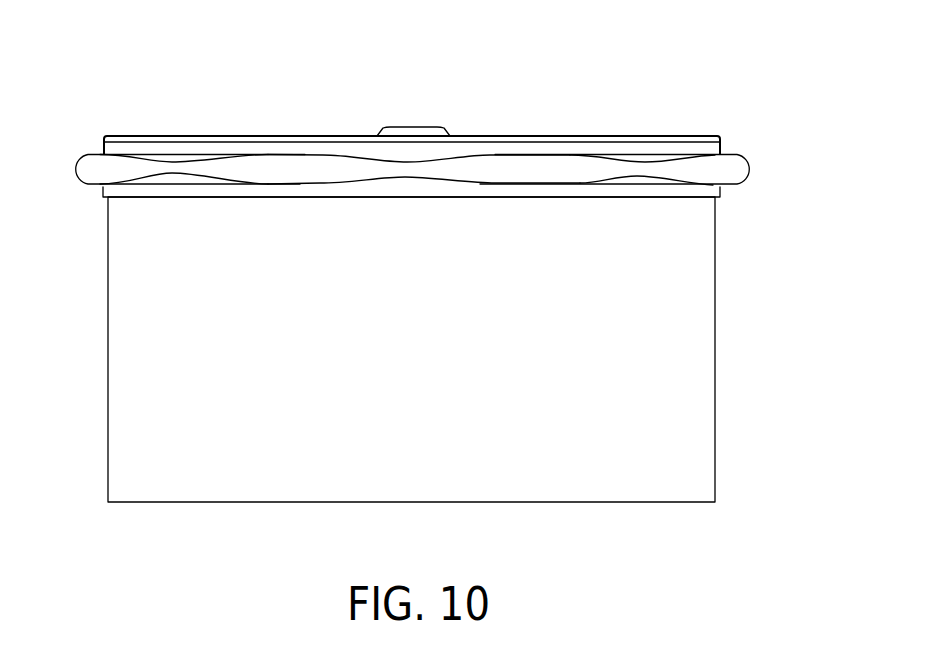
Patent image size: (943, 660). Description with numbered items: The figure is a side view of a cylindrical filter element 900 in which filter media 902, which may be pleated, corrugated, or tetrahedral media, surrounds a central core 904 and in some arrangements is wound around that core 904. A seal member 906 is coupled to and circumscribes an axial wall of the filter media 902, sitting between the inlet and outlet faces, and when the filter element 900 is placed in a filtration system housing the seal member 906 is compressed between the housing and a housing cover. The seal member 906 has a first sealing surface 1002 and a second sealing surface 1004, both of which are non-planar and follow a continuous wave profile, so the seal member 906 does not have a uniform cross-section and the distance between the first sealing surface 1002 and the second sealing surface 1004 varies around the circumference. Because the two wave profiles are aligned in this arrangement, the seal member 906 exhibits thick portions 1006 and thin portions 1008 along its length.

The filter element 900 is at (134, 106).
The filter media 902 is at (132, 445).
The central core 904 is at (423, 128).
The seal member 906 is at (740, 167).
The first sealing surface 1002 is at (618, 155).
The second sealing surface 1004 is at (138, 172).
The thick portions 1006 is at (277, 197).
The thin portions 1008 is at (657, 197).